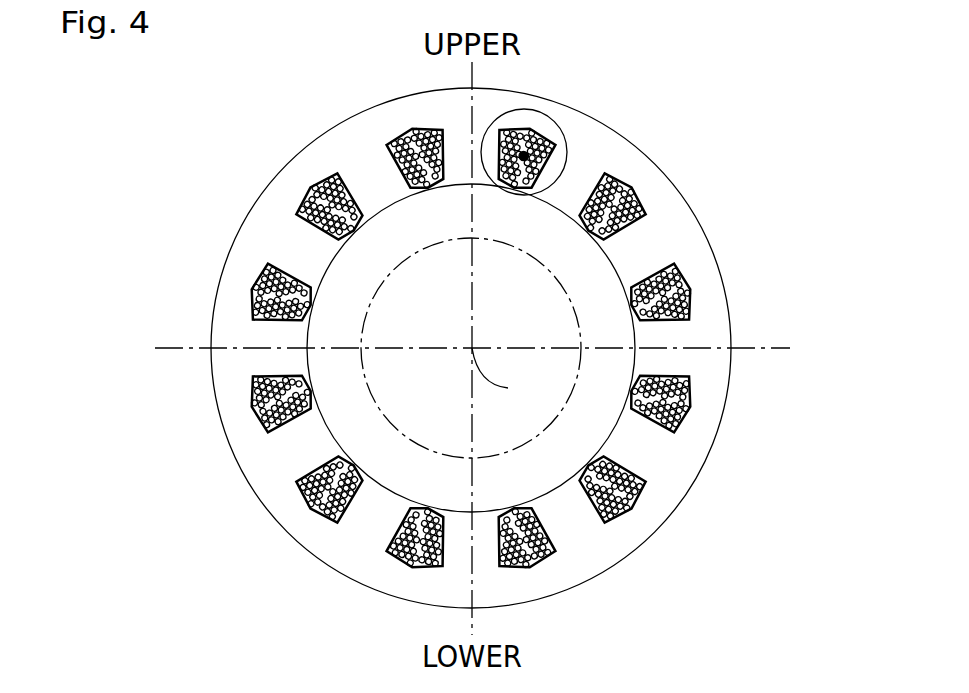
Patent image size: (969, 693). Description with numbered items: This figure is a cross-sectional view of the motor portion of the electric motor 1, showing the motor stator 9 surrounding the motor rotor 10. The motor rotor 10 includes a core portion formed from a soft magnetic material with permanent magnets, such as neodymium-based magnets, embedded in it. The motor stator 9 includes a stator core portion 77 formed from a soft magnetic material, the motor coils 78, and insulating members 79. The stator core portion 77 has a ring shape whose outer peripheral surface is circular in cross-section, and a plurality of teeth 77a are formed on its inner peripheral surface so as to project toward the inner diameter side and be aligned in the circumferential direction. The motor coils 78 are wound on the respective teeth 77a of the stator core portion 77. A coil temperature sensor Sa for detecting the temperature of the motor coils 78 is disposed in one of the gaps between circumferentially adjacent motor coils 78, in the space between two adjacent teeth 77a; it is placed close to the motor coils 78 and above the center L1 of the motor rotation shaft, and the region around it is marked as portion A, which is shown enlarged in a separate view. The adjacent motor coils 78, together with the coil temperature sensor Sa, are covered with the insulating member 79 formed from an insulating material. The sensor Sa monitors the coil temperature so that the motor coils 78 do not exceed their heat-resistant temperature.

The electric motor 1 is at (700, 150).
The motor stator 9 is at (363, 62).
The motor rotor 10 is at (582, 287).
The stator core portion 77 is at (370, 143).
The teeth 77a is at (300, 337).
The motor coils 78 is at (323, 182).
The insulating members 79 is at (307, 197).
The center of the motor rotation shaft L1 is at (506, 381).
The portion A is at (548, 115).
The coil temperature sensor Sa is at (550, 139).